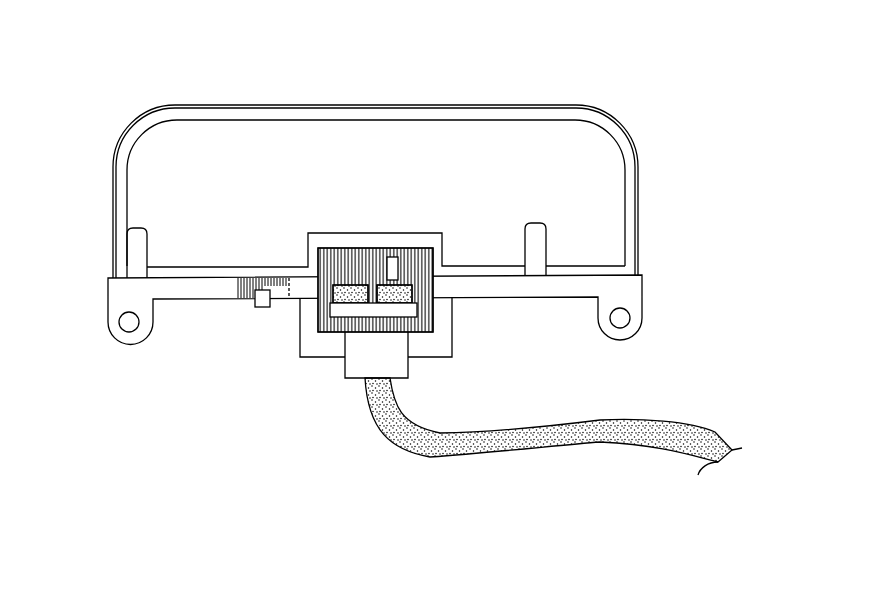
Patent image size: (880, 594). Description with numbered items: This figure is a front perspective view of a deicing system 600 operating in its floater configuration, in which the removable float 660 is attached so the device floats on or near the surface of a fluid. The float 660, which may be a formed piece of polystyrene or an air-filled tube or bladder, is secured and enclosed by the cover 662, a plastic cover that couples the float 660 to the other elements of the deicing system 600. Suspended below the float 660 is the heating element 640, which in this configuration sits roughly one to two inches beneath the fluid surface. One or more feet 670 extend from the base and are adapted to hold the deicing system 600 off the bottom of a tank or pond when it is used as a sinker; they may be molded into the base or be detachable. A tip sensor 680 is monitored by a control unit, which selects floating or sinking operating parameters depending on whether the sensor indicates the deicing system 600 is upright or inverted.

The deicing system 600 is at (130, 36).
The heating element 640 is at (129, 320).
The removable float 660 is at (610, 160).
The cover 662 is at (122, 143).
The feet 670 is at (135, 253).
The tip sensor 680 is at (400, 265).